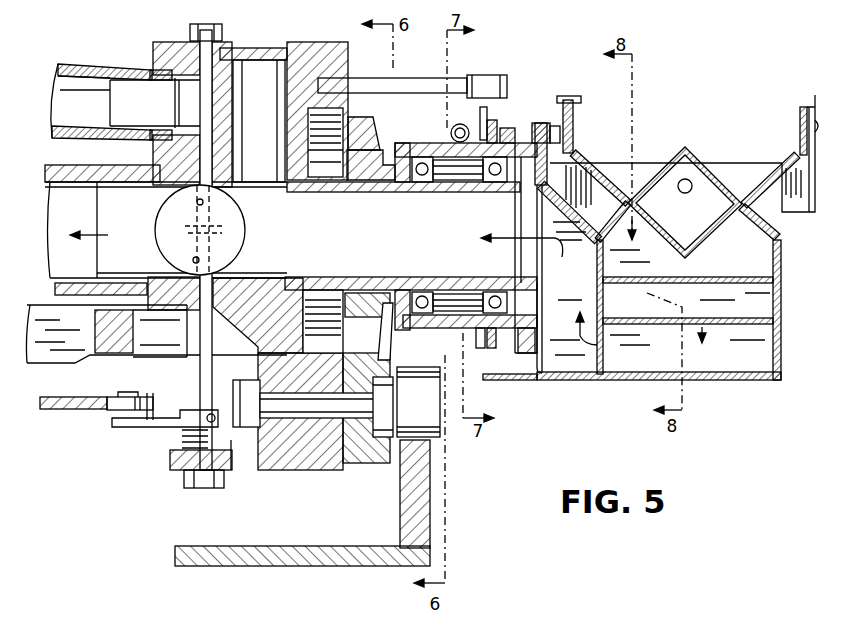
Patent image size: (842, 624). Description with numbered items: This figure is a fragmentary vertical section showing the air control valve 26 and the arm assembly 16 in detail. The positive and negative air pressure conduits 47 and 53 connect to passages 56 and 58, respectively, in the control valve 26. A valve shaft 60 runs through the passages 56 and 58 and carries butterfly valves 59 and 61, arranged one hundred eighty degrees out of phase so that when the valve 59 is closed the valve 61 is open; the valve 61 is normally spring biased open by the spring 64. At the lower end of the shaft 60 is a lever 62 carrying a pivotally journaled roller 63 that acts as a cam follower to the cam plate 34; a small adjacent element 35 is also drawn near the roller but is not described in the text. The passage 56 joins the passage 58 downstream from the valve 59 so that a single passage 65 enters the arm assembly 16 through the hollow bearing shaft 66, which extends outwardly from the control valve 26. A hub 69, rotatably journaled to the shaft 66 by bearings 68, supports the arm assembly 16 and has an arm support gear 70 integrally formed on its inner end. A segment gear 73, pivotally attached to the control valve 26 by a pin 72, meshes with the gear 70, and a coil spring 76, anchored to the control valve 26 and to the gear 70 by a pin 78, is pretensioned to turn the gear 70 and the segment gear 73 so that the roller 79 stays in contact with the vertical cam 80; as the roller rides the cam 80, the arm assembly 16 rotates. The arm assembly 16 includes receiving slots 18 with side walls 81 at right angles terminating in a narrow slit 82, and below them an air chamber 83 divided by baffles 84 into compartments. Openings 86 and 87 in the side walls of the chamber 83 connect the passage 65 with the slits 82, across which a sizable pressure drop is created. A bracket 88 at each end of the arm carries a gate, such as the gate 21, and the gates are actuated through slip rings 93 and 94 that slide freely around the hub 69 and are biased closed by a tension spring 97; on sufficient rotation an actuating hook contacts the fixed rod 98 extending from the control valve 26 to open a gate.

The arm assembly 16 is at (652, 272).
The receiving slots 18 is at (722, 178).
The gate 21 is at (655, 165).
The air control valve 26 is at (320, 48).
The horizontal cam plate 34 is at (83, 410).
The bracket 35 is at (135, 393).
The positive air pressure conduit 47 is at (62, 92).
The negative air pressure conduit 53 is at (62, 212).
The passage 56 is at (240, 136).
The passage 58 is at (192, 230).
The butterfly valve 59 is at (100, 105).
The valve shaft 60 is at (198, 58).
The butterfly valve 61 is at (165, 223).
The lever 62 is at (160, 430).
The roller 63 is at (150, 395).
The spring 64 is at (178, 455).
The passage 65 is at (411, 248).
The hollow bearing shaft 66 is at (505, 182).
The bearings 68 is at (422, 182).
The hub 69 is at (510, 143).
The arm support gear 70 is at (386, 148).
The pin 72 is at (325, 405).
The segment gear 73 is at (367, 115).
The coil spring 76 is at (330, 152).
The pin 78 is at (345, 168).
The roller 79 is at (445, 410).
The vertical cam 80 is at (425, 470).
The side walls 81 is at (732, 178).
The narrow slit 82 is at (637, 168).
The air chamber 83 is at (777, 300).
The baffles 84 is at (698, 281).
The opening 86 is at (582, 360).
The opening 87 is at (542, 293).
The bracket 88 is at (572, 128).
The slip ring 93 is at (478, 348).
The slip ring 94 is at (492, 348).
The tension spring 97 is at (450, 133).
The fixed rod 98 is at (478, 80).